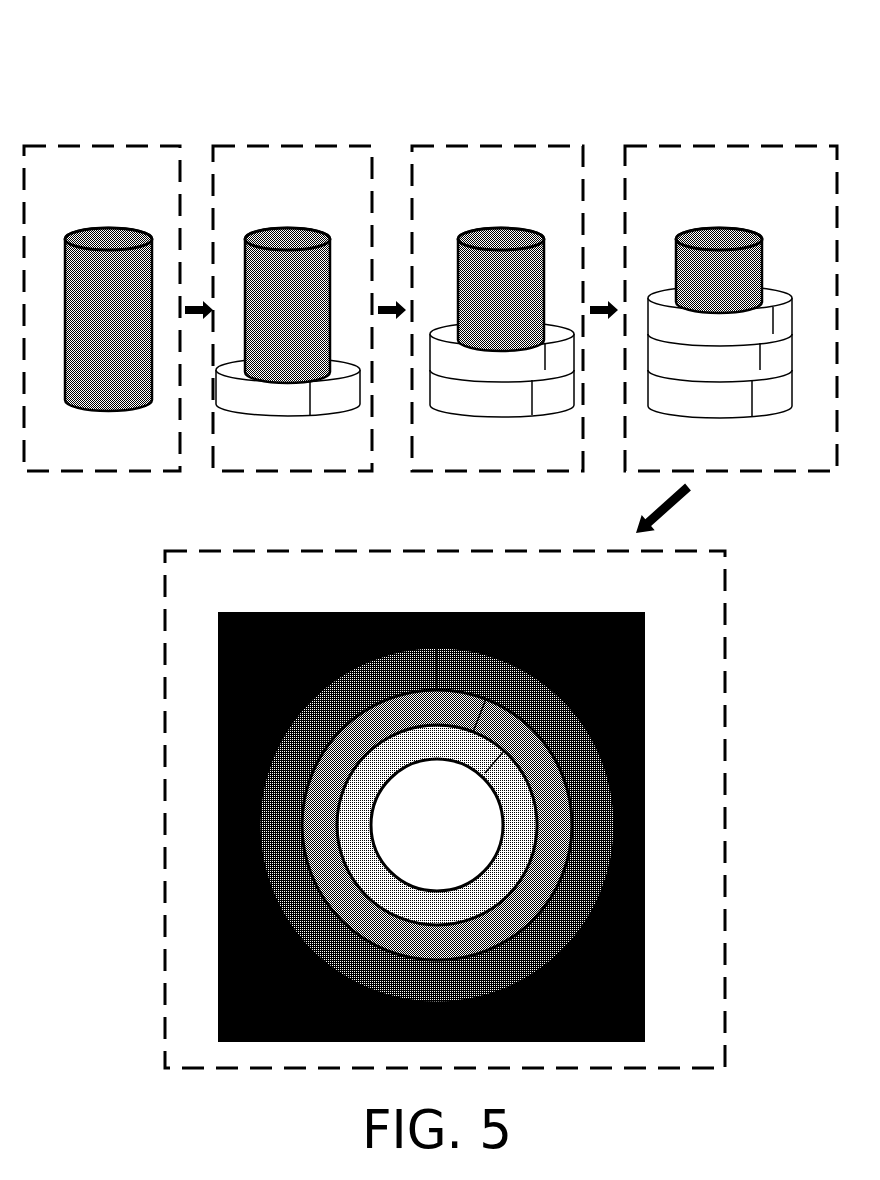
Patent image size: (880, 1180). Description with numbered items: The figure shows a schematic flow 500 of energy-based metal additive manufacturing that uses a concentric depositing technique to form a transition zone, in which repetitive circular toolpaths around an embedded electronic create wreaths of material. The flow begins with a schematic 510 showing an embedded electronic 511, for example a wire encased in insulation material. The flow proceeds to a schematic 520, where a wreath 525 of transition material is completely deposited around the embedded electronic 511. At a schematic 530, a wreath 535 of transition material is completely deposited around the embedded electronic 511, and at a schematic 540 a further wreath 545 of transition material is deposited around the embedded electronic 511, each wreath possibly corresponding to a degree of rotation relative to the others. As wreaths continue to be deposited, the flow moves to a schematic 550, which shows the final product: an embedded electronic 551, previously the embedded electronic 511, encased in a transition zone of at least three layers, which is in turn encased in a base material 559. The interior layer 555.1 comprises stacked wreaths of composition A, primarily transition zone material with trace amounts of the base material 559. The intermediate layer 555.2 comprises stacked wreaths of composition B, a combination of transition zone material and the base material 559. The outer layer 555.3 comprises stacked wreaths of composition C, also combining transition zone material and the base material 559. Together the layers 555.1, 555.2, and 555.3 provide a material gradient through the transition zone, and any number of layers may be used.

The schematic flow 500 is at (613, 106).
The schematic 510 is at (92, 451).
The embedded electronic 511 is at (108, 227).
The schematic 520 is at (269, 451).
The wreath 525 is at (325, 421).
The schematic 530 is at (471, 451).
The wreath 535 is at (447, 319).
The schematic 540 is at (694, 451).
The wreath 545 is at (665, 286).
The schematic 550 is at (382, 589).
The embedded electronic 551 is at (421, 833).
The interior layer 555.1 is at (539, 801).
The intermediate layer 555.2 is at (547, 735).
The outer layer 555.3 is at (618, 612).
The base material 559 is at (261, 612).